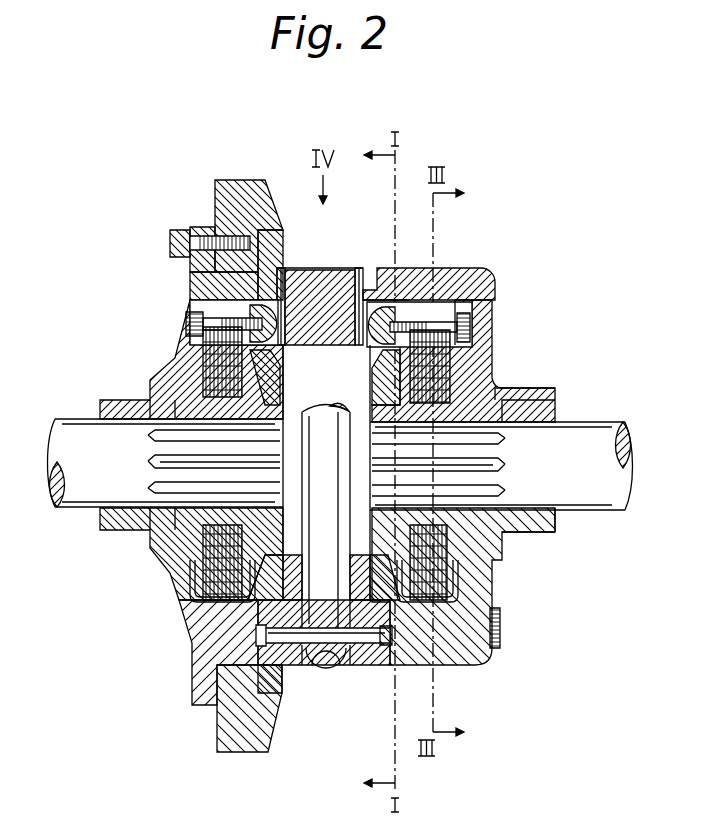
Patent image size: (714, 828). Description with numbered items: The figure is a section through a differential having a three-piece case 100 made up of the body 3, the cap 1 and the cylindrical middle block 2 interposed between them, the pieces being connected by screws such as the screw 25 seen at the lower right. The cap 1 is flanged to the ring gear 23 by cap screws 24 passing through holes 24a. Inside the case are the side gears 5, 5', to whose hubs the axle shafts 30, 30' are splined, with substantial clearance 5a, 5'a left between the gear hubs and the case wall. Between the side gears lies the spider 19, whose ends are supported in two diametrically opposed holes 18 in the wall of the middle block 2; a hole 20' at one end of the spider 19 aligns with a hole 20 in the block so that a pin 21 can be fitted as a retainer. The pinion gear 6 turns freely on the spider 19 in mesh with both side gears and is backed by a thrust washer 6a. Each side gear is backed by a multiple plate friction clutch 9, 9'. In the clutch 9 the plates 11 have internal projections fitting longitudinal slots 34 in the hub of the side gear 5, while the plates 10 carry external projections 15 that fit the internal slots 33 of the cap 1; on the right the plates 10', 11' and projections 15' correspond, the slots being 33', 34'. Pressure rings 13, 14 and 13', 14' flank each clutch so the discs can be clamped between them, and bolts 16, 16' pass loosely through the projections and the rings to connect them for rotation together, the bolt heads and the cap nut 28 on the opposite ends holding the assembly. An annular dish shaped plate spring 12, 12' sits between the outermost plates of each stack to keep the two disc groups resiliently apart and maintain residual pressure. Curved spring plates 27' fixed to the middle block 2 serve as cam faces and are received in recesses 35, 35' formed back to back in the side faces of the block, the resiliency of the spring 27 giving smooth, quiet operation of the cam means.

The cap 1 is at (197, 663).
The cylindrical middle block 2 is at (358, 668).
The body 3 is at (478, 603).
The side gear 5 is at (291, 475).
The side gear 5' is at (356, 475).
The clearance 5a is at (172, 530).
The clearance 5'a is at (572, 537).
The pinion gear 6 is at (290, 583).
The thrust washer 6a is at (403, 650).
The multiple plate friction clutch 9 is at (186, 457).
The multiple plate friction clutch 9' is at (471, 462).
The clutch plate 10 is at (200, 445).
The clutch plate 10' is at (457, 414).
The clutch plate 11 is at (324, 455).
The clutch plate 11' is at (535, 465).
The dish shaped plate spring 12 is at (191, 359).
The dish shaped plate spring 12' is at (464, 361).
The pressure ring 13 is at (294, 268).
The pressure ring 13' is at (397, 265).
The pressure ring 14 is at (155, 335).
The pressure ring 14' is at (510, 299).
The external projection 15 is at (192, 280).
The external projection 15' is at (462, 254).
The bolt 16 is at (166, 298).
The bolt 16' is at (497, 318).
The hole 18 is at (338, 668).
The spider 19 is at (328, 417).
The hole 20 is at (284, 672).
The hole 20' is at (326, 670).
The pin 21 is at (365, 655).
The ring gear 23 is at (216, 182).
The cap screw 24 is at (189, 235).
The hole 24a is at (198, 227).
The screw 25 is at (500, 638).
The spring 27 is at (320, 259).
The curved spring plate 27' is at (425, 236).
The center block 28 is at (338, 268).
The axle shaft 30 is at (166, 488).
The axle shaft 30' is at (507, 442).
The internal slot 33 is at (278, 229).
The internal slot 33' is at (486, 286).
The longitudinal slot 34 is at (192, 459).
The longitudinal slot 34' is at (489, 440).
The recess 35 is at (299, 284).
The recess 35' is at (374, 284).
The three-piece case 100 is at (322, 260).